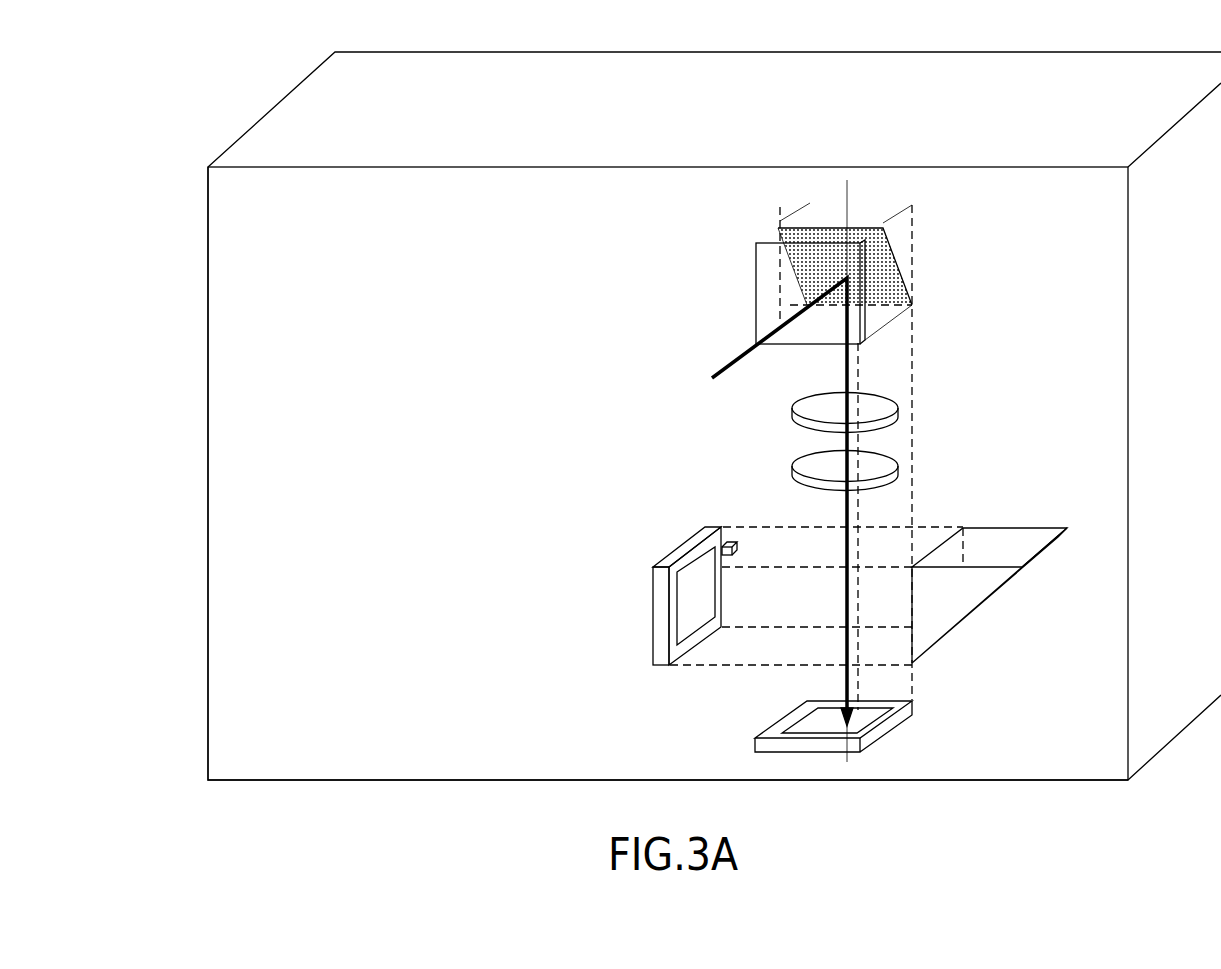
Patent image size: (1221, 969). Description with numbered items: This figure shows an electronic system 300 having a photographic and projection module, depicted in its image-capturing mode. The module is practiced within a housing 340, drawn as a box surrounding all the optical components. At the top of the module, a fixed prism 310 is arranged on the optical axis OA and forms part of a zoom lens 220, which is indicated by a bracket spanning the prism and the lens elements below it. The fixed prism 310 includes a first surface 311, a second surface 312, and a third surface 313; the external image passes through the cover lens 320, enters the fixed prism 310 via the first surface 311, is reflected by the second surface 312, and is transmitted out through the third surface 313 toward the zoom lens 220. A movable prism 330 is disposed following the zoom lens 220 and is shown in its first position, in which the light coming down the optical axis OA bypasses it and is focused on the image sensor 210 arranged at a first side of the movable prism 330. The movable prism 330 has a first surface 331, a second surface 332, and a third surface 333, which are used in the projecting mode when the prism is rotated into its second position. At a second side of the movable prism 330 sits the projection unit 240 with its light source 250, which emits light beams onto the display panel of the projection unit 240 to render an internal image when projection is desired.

The electronic system 300 is at (178, 134).
The housing 340 is at (208, 427).
The optical axis OA is at (847, 190).
The zoom lens 220 is at (982, 230).
The fixed prism 310 is at (830, 262).
The first surface 311 is at (788, 270).
The second surface 312 is at (803, 232).
The third surface 313 is at (888, 310).
The cover lens 320 is at (770, 317).
The movable prism 330 is at (987, 576).
The first surface 331 is at (912, 597).
The second surface 332 is at (968, 622).
The third surface 333 is at (1005, 540).
The image sensor 210 is at (897, 717).
The projection unit 240 is at (622, 533).
The light source 250 is at (732, 540).